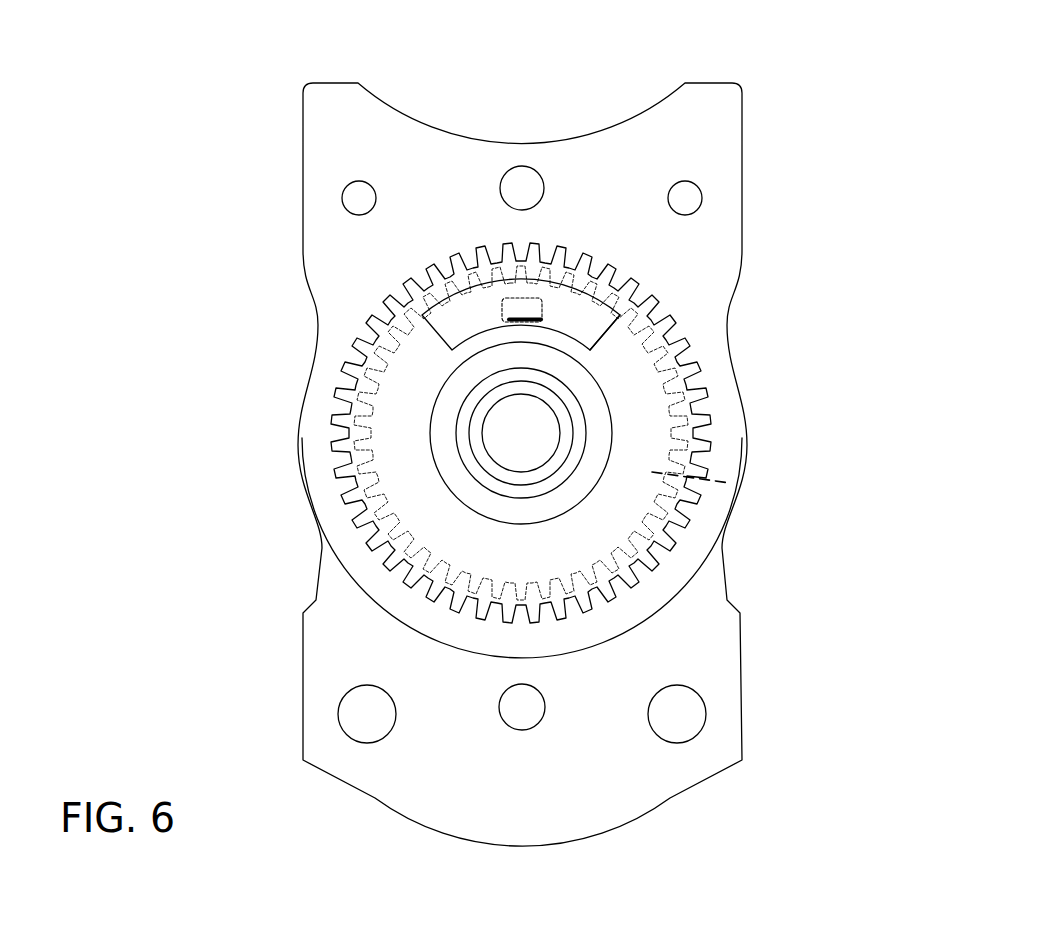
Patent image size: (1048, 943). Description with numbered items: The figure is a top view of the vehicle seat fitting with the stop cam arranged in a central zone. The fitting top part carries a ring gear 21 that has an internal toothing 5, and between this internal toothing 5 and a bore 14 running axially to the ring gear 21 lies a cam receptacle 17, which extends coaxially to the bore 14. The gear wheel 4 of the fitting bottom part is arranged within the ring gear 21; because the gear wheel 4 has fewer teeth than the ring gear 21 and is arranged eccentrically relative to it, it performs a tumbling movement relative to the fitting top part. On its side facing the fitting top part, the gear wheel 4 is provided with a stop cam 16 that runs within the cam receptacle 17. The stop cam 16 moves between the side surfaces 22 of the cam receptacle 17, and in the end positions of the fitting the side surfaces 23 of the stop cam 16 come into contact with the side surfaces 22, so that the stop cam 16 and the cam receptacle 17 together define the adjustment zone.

The gear wheel 4 is at (730, 483).
The internal toothing 5 is at (693, 387).
The bore 14 is at (512, 462).
The stop cam 16 is at (520, 308).
The cam receptacle 17 is at (571, 300).
The ring gear 21 is at (538, 258).
The side surfaces of the cam receptacle 22 is at (590, 336).
The side surfaces of the stop cam 23 is at (562, 310).